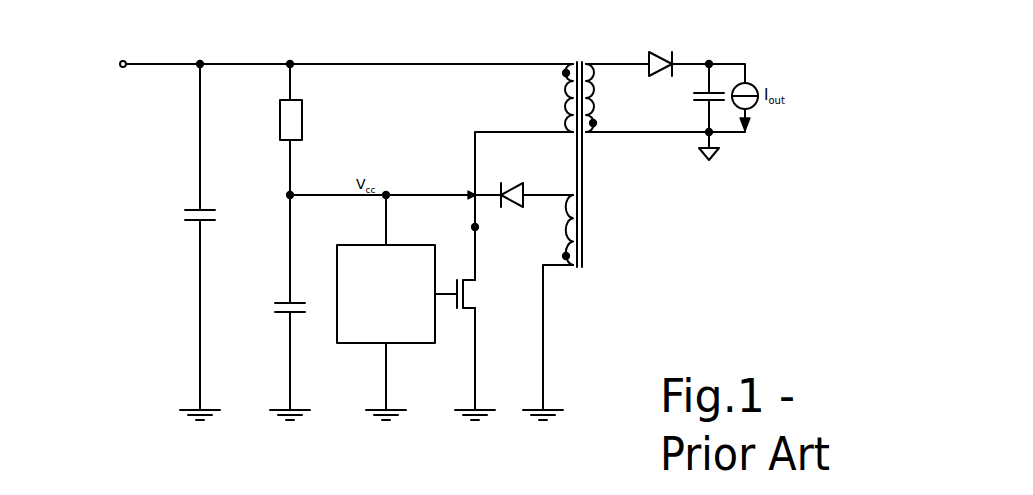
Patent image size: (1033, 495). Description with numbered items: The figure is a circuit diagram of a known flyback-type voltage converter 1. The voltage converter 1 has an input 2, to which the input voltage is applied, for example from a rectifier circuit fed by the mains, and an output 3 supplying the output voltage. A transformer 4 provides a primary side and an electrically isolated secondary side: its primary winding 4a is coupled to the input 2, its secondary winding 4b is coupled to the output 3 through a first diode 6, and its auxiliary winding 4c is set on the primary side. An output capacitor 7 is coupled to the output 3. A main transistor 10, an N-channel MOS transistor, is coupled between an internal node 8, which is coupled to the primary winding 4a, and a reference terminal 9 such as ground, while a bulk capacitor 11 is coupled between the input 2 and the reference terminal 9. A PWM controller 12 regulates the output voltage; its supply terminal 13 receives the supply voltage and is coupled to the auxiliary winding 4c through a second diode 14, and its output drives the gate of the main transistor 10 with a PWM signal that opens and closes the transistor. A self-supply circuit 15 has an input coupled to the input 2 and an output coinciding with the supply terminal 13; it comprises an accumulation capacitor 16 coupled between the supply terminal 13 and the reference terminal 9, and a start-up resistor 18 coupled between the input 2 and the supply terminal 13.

The voltage converter 1 is at (112, 204).
The input 2 is at (124, 68).
The output 3 is at (711, 62).
The transformer 4 is at (578, 164).
The primary winding 4a is at (562, 104).
The secondary winding 4b is at (597, 109).
The auxiliary winding 4c is at (561, 218).
The first diode 6 is at (648, 52).
The output capacitor 7 is at (704, 100).
The internal node 8 is at (472, 227).
The reference terminal 9 is at (300, 422).
The main transistor 10 is at (468, 298).
The bulk capacitor 11 is at (196, 222).
The PWM controller 12 is at (368, 335).
The supply terminal 13 is at (387, 195).
The second diode 14 is at (513, 210).
The self-supply circuit 15 is at (275, 233).
The accumulation capacitor 16 is at (280, 315).
The start-up resistor 18 is at (284, 118).